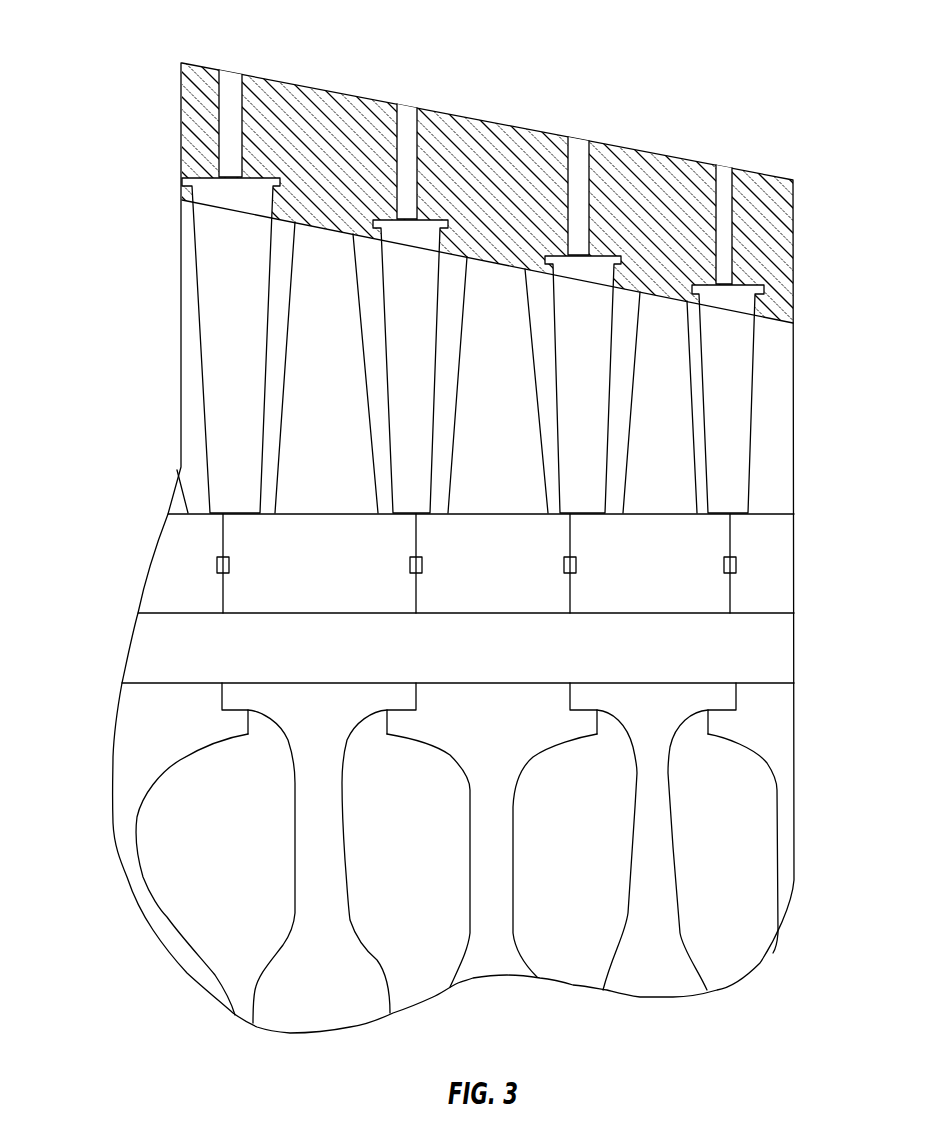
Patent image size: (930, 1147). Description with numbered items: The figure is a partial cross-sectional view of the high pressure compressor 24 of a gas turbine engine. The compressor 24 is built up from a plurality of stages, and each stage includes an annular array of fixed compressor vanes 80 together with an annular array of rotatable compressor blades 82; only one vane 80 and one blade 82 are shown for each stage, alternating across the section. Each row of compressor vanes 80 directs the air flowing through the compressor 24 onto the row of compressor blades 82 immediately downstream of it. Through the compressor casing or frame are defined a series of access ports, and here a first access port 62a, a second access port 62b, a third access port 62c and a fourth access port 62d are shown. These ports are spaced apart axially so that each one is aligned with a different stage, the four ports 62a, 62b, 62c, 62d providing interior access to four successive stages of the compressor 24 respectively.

The high pressure compressor 24 is at (111, 92).
The first access port 62a is at (226, 58).
The second access port 62b is at (400, 92).
The third access port 62c is at (578, 130).
The fourth access port 62d is at (721, 160).
The fixed compressor vane 80 is at (243, 342).
The rotatable compressor blade 82 is at (339, 371).